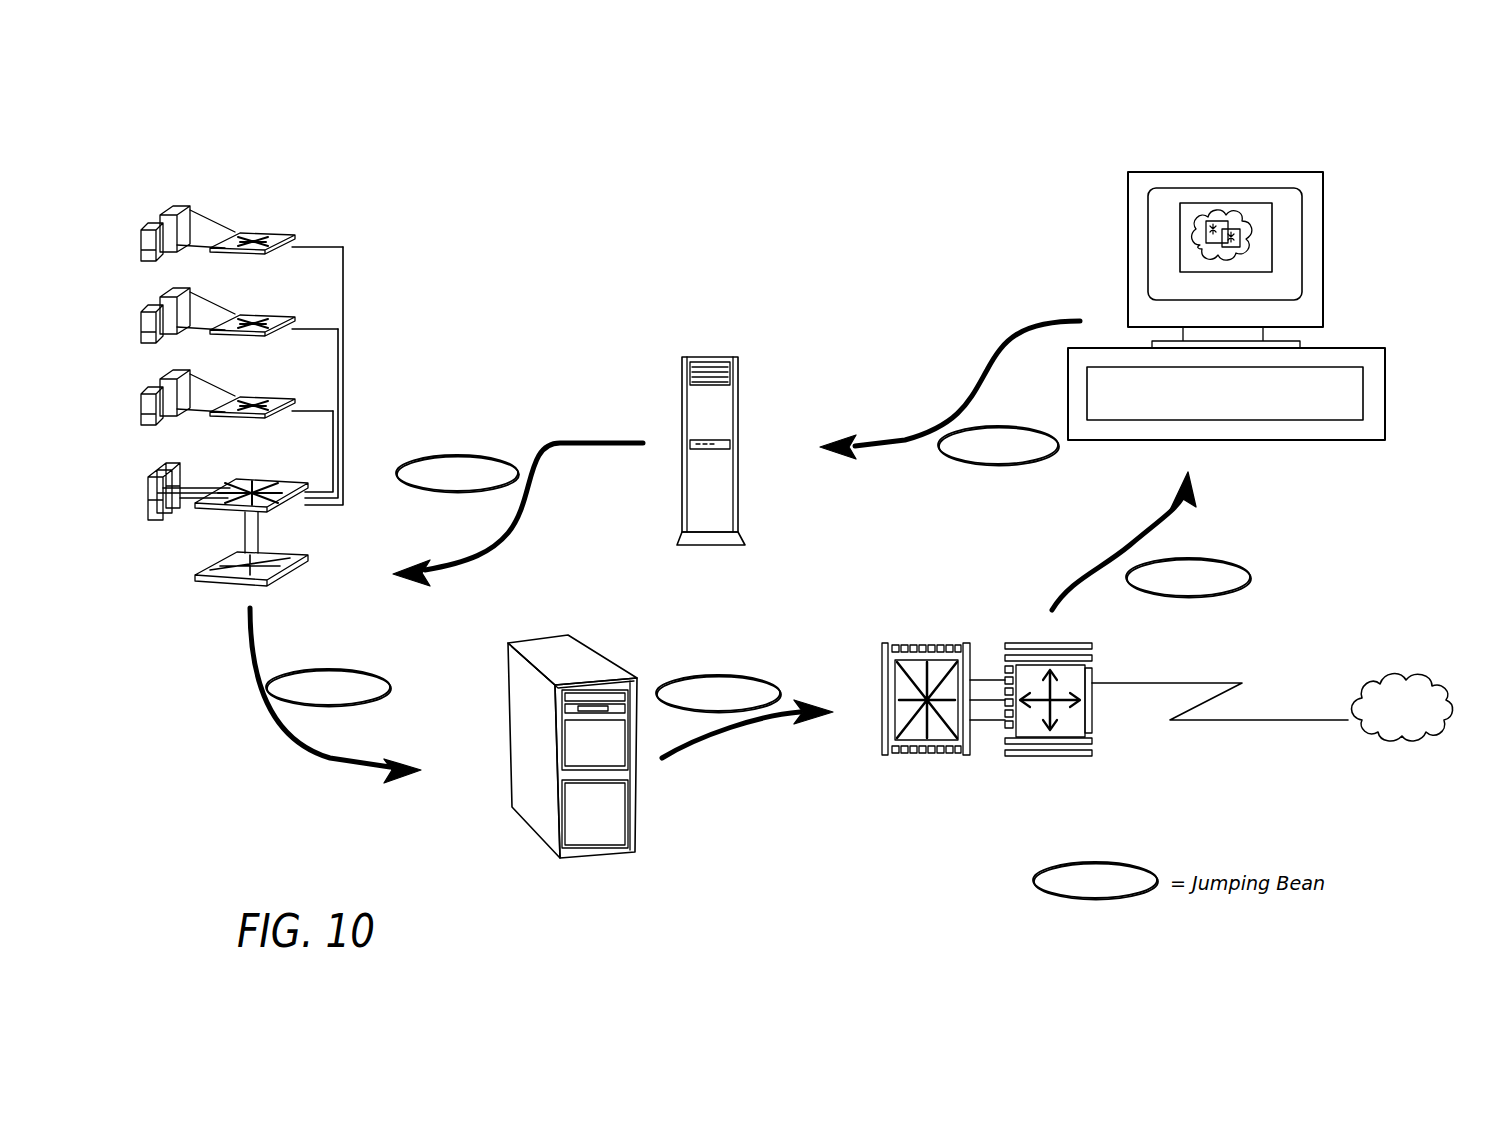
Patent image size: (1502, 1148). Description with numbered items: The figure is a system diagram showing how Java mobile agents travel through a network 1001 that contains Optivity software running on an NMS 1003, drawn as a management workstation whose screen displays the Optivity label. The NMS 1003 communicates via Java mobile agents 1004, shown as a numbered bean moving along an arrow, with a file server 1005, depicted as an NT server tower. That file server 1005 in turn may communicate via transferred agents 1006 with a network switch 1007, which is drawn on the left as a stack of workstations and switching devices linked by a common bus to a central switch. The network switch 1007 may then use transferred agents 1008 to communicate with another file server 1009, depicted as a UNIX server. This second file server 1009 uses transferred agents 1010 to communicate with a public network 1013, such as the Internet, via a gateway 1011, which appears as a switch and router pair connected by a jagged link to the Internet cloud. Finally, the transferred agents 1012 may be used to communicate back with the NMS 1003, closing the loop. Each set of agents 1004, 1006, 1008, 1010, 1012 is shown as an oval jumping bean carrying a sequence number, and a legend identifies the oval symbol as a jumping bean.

The network 1001 is at (786, 203).
The NMS 1003 is at (1323, 348).
The Java mobile agents 1004 is at (995, 464).
The file server 1005 is at (738, 406).
The transferred agents 1006 is at (459, 492).
The network switch 1007 is at (345, 470).
The transferred agents 1008 is at (333, 670).
The file server 1009 is at (540, 638).
The transferred agents 1010 is at (720, 673).
The gateway 1011 is at (918, 643).
The transferred agents 1012 is at (1250, 577).
The public network 1013 is at (1408, 674).